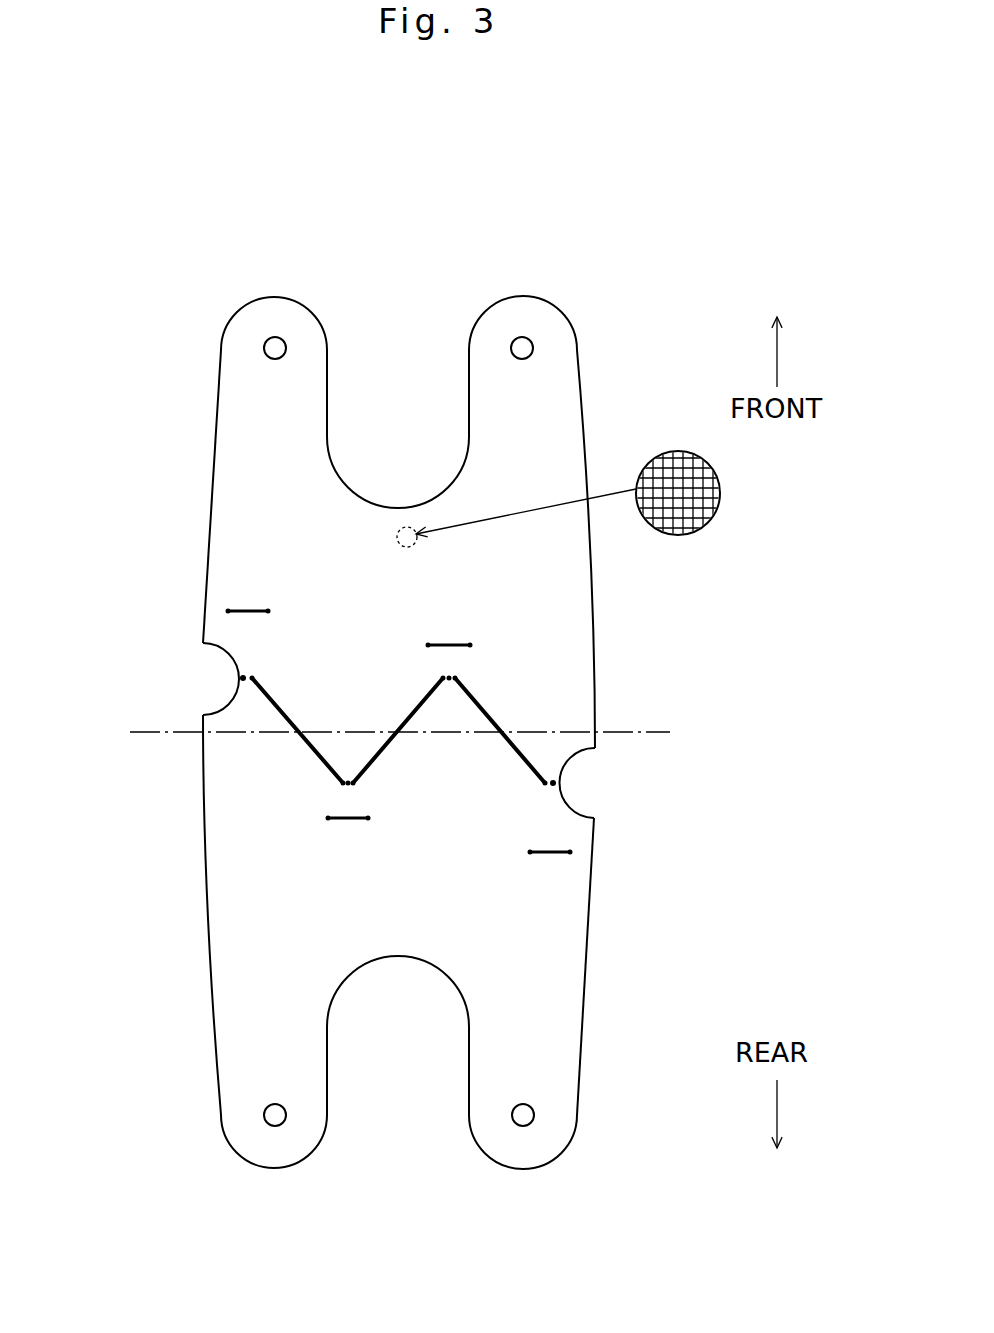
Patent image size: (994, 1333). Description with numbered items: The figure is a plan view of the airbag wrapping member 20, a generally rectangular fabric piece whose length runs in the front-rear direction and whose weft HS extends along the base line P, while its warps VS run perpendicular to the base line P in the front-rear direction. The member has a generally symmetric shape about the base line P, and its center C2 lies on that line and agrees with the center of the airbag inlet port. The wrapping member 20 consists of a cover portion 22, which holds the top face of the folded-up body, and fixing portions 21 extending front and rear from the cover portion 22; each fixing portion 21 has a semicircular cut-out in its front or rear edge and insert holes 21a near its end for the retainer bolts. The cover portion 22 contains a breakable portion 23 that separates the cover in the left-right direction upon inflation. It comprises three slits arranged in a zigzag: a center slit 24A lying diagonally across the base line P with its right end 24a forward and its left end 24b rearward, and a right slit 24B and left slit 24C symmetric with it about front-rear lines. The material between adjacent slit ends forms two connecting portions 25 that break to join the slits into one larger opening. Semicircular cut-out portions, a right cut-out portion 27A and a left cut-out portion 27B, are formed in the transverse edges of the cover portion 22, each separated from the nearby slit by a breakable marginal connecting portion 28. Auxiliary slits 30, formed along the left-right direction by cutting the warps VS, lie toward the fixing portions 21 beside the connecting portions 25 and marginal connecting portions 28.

The airbag wrapping member 20 is at (585, 313).
The fixing portion 21 is at (584, 353).
The insert hole 21a is at (275, 336).
The cover portion 22 is at (200, 598).
The breakable portion 23 is at (350, 727).
The center slit 24A is at (400, 733).
The right slit 24B is at (500, 727).
The left slit 24C is at (300, 734).
The right end 24a is at (443, 676).
The left end 24b is at (252, 678).
The connecting portion 25 is at (448, 676).
The right cut-out portion 27A is at (580, 805).
The left cut-out portion 27B is at (220, 657).
The marginal connecting portion 28 is at (243, 680).
The auxiliary slit 30 is at (248, 609).
The center of the wrapping member C2 is at (357, 787).
The base line P is at (567, 731).
The warp VS is at (680, 455).
The weft HS is at (696, 528).